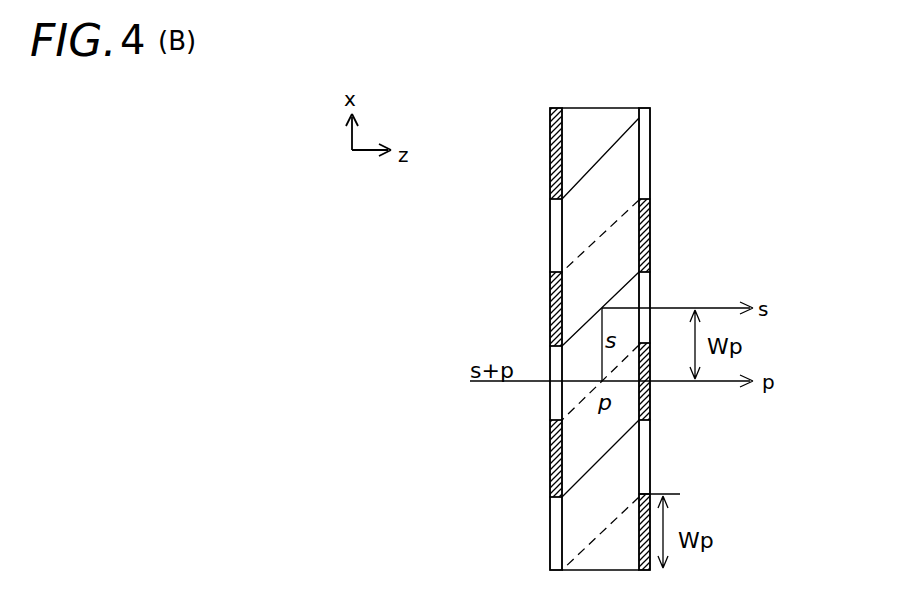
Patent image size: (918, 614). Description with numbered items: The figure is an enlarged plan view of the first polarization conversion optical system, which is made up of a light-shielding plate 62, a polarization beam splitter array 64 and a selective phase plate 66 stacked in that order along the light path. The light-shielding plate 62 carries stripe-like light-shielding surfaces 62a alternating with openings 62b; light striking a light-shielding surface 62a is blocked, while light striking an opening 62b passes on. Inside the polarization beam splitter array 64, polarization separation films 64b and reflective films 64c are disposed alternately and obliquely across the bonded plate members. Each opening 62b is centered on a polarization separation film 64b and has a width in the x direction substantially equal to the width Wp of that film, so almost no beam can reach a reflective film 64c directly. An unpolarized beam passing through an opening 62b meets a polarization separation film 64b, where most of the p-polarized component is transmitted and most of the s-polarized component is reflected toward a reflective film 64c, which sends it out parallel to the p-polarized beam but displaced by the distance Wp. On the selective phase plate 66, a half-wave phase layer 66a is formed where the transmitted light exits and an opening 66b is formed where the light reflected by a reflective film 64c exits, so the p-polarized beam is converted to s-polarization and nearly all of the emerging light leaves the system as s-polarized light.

The light-shielding plate 62 is at (516, 313).
The light-shielding surface 62a is at (553, 161).
The opening 62b is at (556, 242).
The polarization beam splitter array 64 is at (618, 313).
The polarization separation film 64b is at (589, 395).
The reflective film 64c is at (636, 268).
The selective phase plate 66 is at (701, 313).
The λ/2 phase layer 66a is at (652, 217).
The opening 66b is at (653, 152).